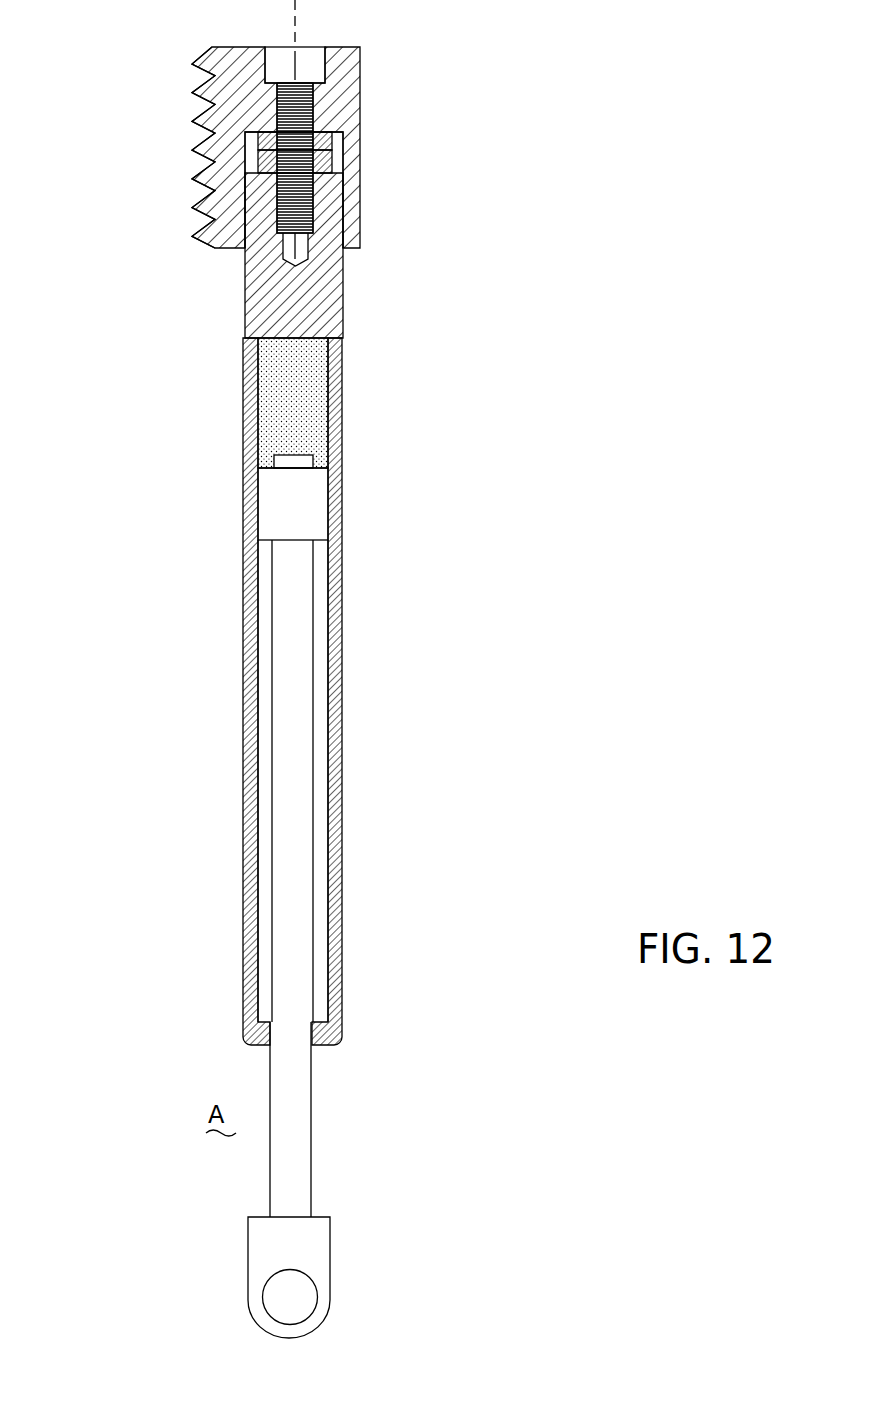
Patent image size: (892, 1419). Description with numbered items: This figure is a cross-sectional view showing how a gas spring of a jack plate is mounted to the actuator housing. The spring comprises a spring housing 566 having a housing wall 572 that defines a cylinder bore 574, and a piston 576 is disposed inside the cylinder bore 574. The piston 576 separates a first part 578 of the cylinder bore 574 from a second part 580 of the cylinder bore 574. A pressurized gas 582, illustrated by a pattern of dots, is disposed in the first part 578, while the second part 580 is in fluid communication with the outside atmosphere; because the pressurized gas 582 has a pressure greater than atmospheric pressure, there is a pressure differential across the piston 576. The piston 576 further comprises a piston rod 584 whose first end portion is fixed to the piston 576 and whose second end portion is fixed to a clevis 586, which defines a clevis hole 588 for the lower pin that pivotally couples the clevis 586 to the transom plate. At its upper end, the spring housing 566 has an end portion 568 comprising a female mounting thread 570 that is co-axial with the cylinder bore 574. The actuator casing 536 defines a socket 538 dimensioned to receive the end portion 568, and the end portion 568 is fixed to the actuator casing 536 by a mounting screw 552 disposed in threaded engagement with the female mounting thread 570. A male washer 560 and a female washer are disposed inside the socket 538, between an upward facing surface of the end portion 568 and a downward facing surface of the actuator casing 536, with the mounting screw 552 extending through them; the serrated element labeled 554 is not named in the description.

The actuator casing 536 is at (358, 146).
The socket 538 is at (357, 113).
The mounting screw 552 is at (247, 312).
The nut 554 is at (258, 163).
The male washer 560 is at (240, 145).
The spring housing 566 is at (345, 325).
The end portion 568 is at (353, 249).
The female mounting thread 570 is at (260, 215).
The housing wall 572 is at (342, 858).
The cylinder bore 574 is at (329, 812).
The piston 576 is at (280, 520).
The first part 578 is at (313, 422).
The second part 580 is at (322, 597).
The pressurized gas 582 is at (287, 432).
The piston rod 584 is at (311, 1130).
The clevis 586 is at (330, 1217).
The clevis hole 588 is at (313, 1283).